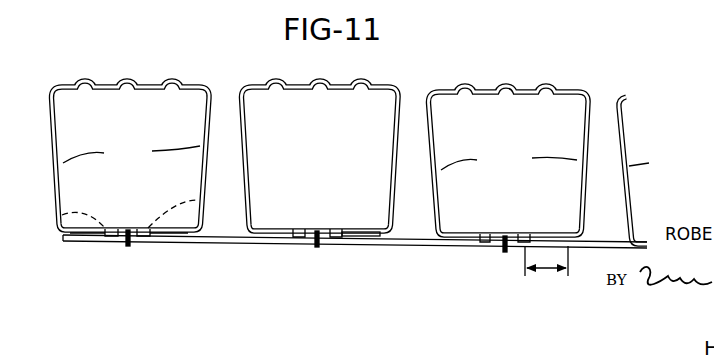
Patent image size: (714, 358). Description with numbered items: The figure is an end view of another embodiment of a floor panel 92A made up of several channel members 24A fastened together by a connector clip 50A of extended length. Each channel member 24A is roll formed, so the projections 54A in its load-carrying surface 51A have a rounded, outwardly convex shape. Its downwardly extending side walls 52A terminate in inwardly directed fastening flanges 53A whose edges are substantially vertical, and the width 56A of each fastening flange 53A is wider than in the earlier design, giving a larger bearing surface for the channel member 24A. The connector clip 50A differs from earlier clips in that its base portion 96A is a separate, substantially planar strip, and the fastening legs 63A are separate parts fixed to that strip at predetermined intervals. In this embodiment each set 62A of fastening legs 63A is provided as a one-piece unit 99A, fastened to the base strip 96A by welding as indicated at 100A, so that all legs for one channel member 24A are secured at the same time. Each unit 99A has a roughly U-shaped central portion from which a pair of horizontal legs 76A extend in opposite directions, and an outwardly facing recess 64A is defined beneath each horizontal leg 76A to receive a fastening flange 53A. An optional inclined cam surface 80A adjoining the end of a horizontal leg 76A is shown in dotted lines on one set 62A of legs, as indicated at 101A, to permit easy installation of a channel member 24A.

The channel member 24A is at (64, 137).
The side wall 52A is at (380, 161).
The projection 54A is at (128, 78).
The load-carrying surface 51A is at (166, 68).
The floor panel 92A is at (446, 44).
The connector clip 50A is at (400, 252).
The base portion 96A is at (442, 246).
The set of fastening legs 62A is at (118, 224).
The unit 99A is at (138, 222).
The cam surface 80A is at (70, 213).
The fastening flange 53A is at (86, 240).
The weld 100A is at (128, 248).
The cam surface configuration 101A is at (116, 246).
The horizontal leg 76A is at (297, 227).
The fastening leg 63A is at (340, 228).
The recess 64A is at (297, 238).
The width of fastening flange 56A is at (545, 270).